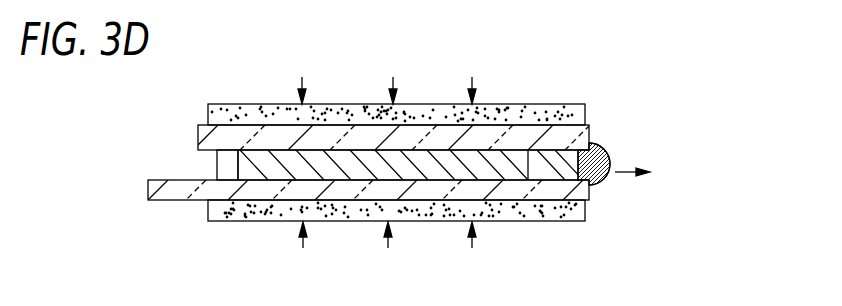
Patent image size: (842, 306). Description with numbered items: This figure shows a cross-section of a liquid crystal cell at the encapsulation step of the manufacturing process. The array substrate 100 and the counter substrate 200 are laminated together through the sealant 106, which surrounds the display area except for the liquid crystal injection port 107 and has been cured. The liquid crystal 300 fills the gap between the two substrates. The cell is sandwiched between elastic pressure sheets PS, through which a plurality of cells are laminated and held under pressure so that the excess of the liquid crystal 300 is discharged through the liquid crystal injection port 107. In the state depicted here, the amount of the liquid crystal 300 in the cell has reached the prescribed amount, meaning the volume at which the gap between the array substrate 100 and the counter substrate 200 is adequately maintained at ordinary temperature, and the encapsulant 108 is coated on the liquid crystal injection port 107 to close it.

The array substrate 100 is at (590, 193).
The counter substrate 200 is at (534, 135).
The liquid crystal 300 is at (428, 162).
The sealant 106 is at (219, 164).
The liquid crystal injection port 107 is at (550, 174).
The encapsulant 108 is at (606, 151).
The elastic pressure sheet PS is at (350, 104).